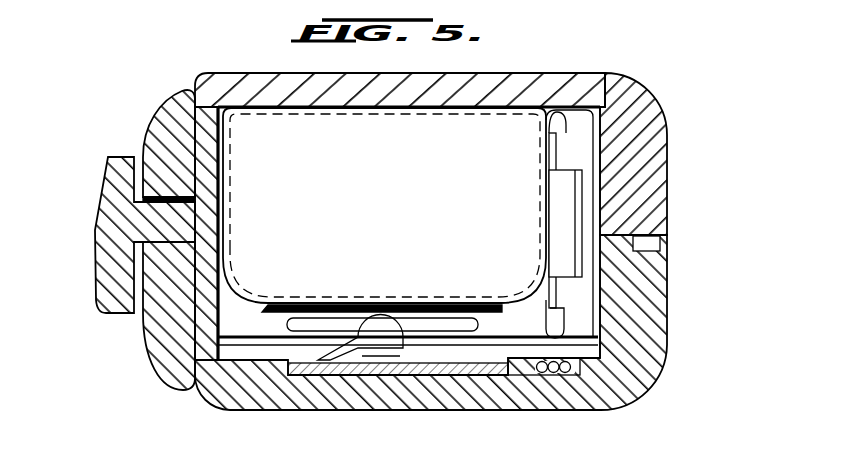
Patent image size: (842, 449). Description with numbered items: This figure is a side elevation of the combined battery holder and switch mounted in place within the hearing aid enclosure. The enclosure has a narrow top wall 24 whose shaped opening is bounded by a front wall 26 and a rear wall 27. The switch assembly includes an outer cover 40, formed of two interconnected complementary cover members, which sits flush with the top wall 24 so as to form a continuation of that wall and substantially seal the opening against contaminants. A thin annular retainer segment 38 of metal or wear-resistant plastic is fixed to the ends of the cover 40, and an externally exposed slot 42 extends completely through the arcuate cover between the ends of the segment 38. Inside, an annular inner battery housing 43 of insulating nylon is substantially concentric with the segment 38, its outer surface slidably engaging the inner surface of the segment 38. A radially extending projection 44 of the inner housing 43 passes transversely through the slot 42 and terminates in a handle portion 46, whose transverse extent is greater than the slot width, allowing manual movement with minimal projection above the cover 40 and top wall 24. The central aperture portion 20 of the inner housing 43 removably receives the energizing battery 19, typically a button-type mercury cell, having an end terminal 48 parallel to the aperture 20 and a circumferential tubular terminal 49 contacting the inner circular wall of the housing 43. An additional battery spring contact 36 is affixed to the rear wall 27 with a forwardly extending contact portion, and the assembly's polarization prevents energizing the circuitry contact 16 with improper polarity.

The hearing aid circuitry contact 16 is at (422, 388).
The energizing battery 19 is at (403, 197).
The central aperture portion 20 is at (258, 320).
The top wall 24 is at (195, 398).
The front wall 26 is at (553, 82).
The rear wall 27 is at (567, 393).
The battery spring contact 36 is at (388, 334).
The annular retainer segment 38 is at (592, 265).
The outer cover 40 is at (142, 340).
The slot 42 is at (163, 190).
The inner battery housing 43 is at (206, 166).
The projection 44 is at (156, 197).
The handle portion 46 is at (95, 236).
The end terminal 48 is at (480, 328).
The tubular terminal 49 is at (557, 200).